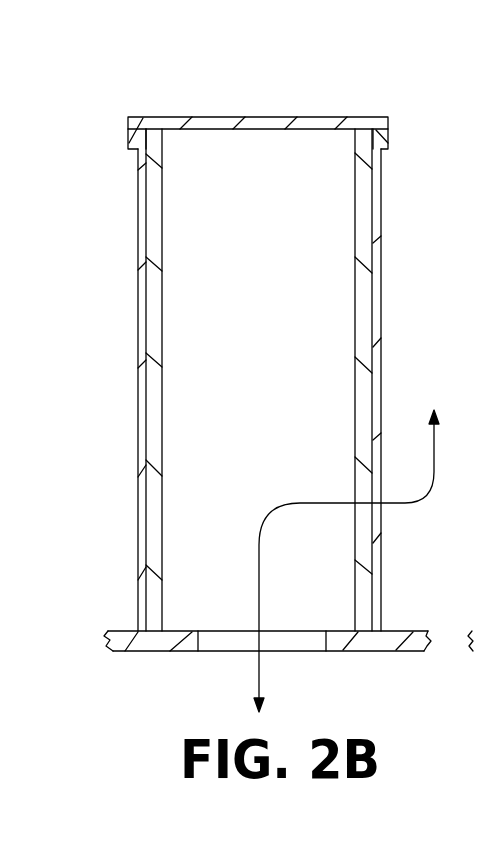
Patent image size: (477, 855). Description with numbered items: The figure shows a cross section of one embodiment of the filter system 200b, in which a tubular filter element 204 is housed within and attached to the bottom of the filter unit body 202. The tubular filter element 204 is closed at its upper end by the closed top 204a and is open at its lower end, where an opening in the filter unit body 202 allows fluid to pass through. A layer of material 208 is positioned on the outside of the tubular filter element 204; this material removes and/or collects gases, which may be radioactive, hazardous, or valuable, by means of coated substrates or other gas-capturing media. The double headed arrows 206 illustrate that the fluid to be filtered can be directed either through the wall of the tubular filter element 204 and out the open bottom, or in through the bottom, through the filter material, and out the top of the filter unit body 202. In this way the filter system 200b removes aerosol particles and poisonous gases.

The filter system 200b is at (292, 70).
The filter unit body 202 is at (153, 652).
The tubular filter element 204 is at (164, 283).
The closed top 204a is at (152, 116).
The double headed arrows 206 is at (308, 503).
The layer of material 208 is at (382, 313).